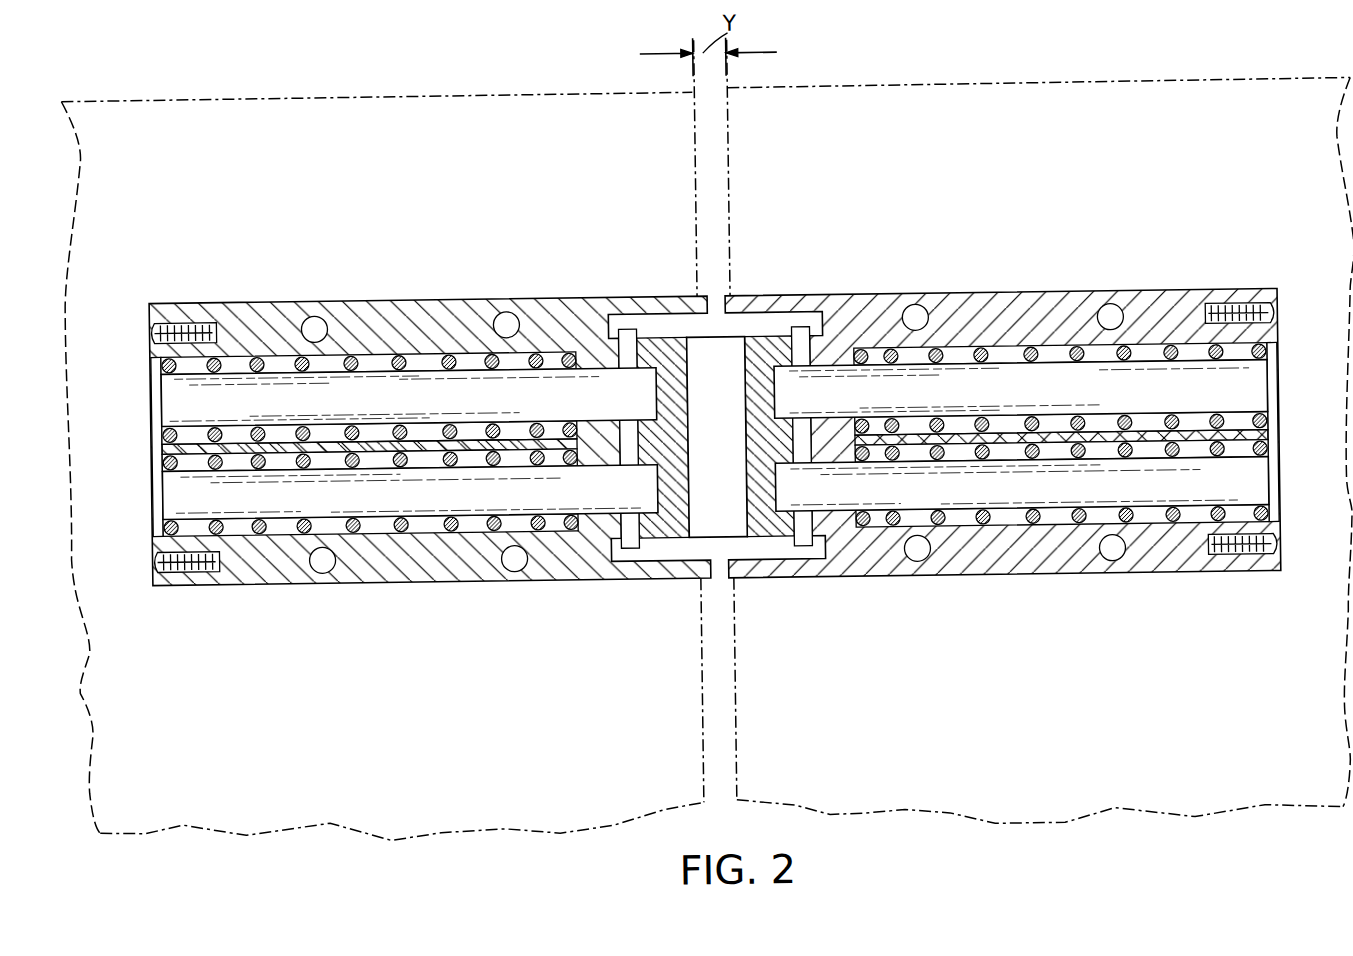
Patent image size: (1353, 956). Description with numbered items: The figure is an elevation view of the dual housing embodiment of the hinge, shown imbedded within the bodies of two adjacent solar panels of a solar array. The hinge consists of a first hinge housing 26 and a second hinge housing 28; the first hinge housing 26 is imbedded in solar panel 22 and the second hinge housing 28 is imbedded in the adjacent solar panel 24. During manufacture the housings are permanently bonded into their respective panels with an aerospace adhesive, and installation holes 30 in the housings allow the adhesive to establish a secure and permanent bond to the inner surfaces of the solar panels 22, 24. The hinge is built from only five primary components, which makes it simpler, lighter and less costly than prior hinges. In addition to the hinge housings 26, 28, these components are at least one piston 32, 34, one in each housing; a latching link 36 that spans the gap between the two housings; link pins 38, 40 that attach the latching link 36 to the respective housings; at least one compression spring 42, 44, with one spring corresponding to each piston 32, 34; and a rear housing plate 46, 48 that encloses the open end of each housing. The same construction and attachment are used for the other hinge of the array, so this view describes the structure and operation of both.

The solar panel 22 is at (967, 85).
The solar panel 24 is at (378, 88).
The first hinge housing 26 is at (1092, 590).
The second hinge housing 28 is at (401, 594).
The installation holes 30 is at (917, 314).
The piston 32 is at (1038, 397).
The piston 34 is at (175, 406).
The latching link 36 is at (703, 515).
The link pin 38 is at (804, 332).
The link pin 40 is at (629, 332).
The compression spring 42 is at (1084, 360).
The compression spring 44 is at (413, 362).
The rear housing plate 46 is at (1277, 536).
The rear housing plate 48 is at (154, 545).